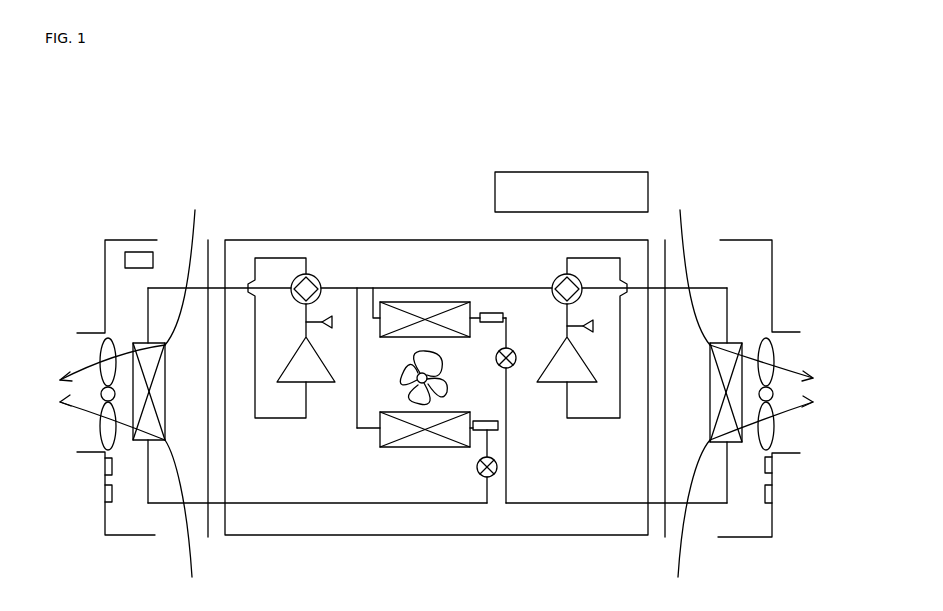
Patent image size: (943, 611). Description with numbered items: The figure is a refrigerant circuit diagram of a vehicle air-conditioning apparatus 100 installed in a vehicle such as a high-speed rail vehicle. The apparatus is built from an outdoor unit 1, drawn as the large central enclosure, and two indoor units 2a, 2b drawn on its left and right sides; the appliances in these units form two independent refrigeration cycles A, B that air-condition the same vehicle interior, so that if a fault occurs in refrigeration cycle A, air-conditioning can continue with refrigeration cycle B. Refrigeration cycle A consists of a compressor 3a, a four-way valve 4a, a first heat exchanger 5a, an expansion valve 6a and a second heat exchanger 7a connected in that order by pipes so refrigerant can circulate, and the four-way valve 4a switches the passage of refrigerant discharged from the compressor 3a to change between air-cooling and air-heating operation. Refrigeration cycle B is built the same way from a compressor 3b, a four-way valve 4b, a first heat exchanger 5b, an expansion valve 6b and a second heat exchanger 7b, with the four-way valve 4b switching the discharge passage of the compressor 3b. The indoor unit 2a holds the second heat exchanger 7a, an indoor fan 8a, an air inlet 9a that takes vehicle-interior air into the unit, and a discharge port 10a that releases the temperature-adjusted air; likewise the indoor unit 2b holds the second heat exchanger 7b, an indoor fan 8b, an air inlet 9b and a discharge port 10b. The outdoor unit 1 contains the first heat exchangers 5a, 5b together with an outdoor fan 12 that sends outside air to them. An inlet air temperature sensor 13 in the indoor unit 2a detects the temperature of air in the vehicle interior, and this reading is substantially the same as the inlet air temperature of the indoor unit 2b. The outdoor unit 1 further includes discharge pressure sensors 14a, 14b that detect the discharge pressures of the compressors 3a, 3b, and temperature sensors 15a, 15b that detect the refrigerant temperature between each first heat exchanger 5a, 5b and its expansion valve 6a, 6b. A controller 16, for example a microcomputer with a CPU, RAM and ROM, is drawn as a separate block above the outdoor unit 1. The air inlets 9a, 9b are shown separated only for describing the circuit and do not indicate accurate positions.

The outdoor unit 1 is at (389, 240).
The vehicle air-conditioning apparatus 100 is at (739, 177).
The controller 16 is at (648, 182).
The inlet air temperature sensor 13 is at (138, 252).
The indoor unit 2a is at (105, 266).
The indoor unit 2b is at (772, 268).
The compressor 3a is at (298, 355).
The compressor 3b is at (560, 357).
The four-way valve 4a is at (318, 280).
The four-way valve 4b is at (556, 279).
The first heat exchanger 5a is at (405, 448).
The first heat exchanger 5b is at (430, 302).
The expansion valve 6a is at (477, 470).
The expansion valve 6b is at (513, 350).
The second heat exchanger 7a is at (142, 343).
The second heat exchanger 7b is at (733, 343).
The indoor fan 8a is at (100, 352).
The indoor fan 8b is at (775, 347).
The air inlet 9a is at (200, 246).
The air inlet 9b is at (697, 247).
The discharge port 10a is at (83, 430).
The discharge port 10b is at (783, 430).
The outdoor fan 12 is at (403, 362).
The discharge pressure sensor 14a is at (323, 318).
The discharge pressure sensor 14b is at (590, 320).
The temperature sensor 15a is at (482, 421).
The temperature sensor 15b is at (492, 313).
The refrigeration cycle A is at (300, 505).
The refrigeration cycle B is at (575, 505).